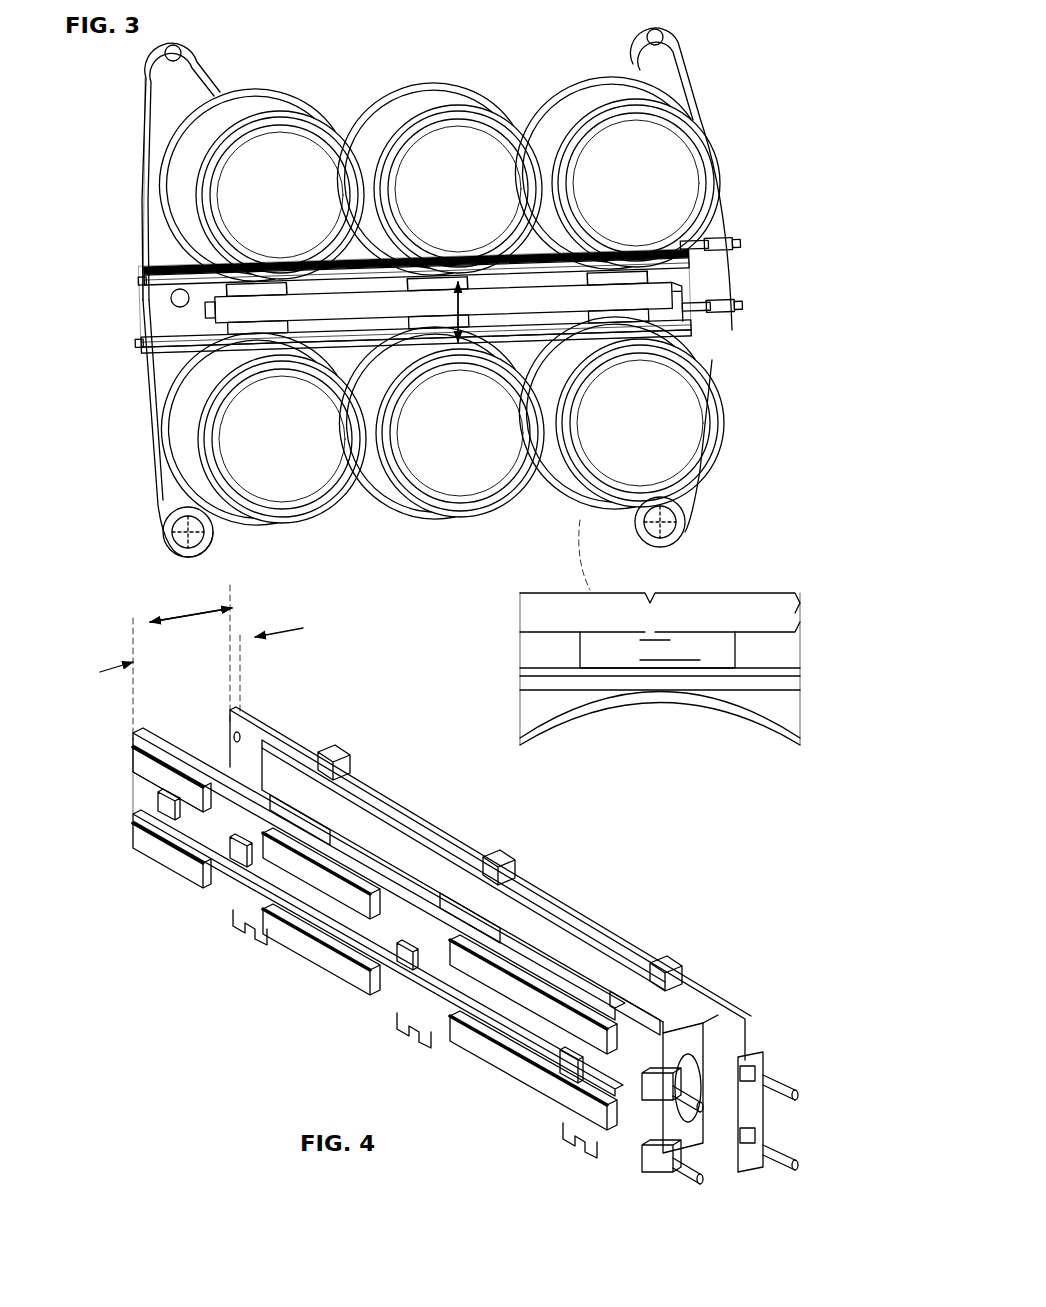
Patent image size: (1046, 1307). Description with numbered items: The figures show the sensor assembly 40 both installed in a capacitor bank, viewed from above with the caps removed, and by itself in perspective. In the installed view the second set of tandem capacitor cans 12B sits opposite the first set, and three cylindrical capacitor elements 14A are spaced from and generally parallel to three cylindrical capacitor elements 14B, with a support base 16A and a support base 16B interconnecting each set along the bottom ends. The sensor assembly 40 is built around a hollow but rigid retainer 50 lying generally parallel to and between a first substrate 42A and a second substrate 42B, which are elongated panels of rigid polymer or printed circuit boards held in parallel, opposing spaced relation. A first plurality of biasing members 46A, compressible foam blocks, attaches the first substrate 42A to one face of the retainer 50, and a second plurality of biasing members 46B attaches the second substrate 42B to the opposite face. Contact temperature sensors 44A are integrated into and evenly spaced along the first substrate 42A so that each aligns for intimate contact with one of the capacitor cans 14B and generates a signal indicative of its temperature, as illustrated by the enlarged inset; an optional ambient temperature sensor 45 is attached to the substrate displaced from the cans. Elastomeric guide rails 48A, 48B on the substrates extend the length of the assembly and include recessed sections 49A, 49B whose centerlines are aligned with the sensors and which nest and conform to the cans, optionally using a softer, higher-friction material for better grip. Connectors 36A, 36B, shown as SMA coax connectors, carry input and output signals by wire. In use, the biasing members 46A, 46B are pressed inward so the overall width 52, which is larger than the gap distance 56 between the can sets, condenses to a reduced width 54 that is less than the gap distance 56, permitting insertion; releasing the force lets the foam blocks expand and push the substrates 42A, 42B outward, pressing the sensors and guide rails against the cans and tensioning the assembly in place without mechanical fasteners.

In FIG. 3, the second set of tandem capacitor cans 12B is at (498, 80).
In FIG. 3, the cylindrical capacitor elements 14A is at (243, 108).
In FIG. 3, the cylindrical capacitor elements 14B is at (288, 525).
In FIG. 3, the support base 16A is at (150, 175).
In FIG. 3, the support base 16B is at (150, 440).
In FIG. 3, the connector 36A is at (738, 345).
In FIG. 4, the connector 36A is at (683, 1107).
In FIG. 3, the connector 36B is at (738, 240).
In FIG. 4, the connector 36B is at (788, 1160).
In FIG. 3, the sensor assembly 40 is at (177, 252).
In FIG. 4, the sensor assembly 40 is at (662, 872).
In FIG. 3, the first substrate 42A is at (150, 341).
In FIG. 4, the first substrate 42A is at (140, 733).
In FIG. 3, the second substrate 42B is at (150, 270).
In FIG. 4, the second substrate 42B is at (232, 713).
In FIG. 3, the contact temperature sensors 44A is at (645, 690).
In FIG. 4, the contact temperature sensors 44A is at (230, 857).
In FIG. 4, the ambient temperature sensor 45 is at (160, 803).
In FIG. 3, the biasing members 46A is at (262, 330).
In FIG. 4, the biasing members 46A is at (283, 810).
In FIG. 3, the biasing members 46B is at (277, 290).
In FIG. 4, the biasing members 46B is at (353, 803).
In FIG. 3, the elastomeric guide rail 48A is at (150, 336).
In FIG. 4, the elastomeric guide rail 48A is at (300, 893).
In FIG. 3, the elastomeric guide rail 48B is at (152, 263).
In FIG. 4, the elastomeric guide rail 48B is at (572, 923).
In FIG. 4, the recessed sections 49A is at (235, 815).
In FIG. 3, the recessed sections 49B is at (250, 275).
In FIG. 3, the rigid retainer 50 is at (690, 300).
In FIG. 4, the rigid retainer 50 is at (413, 827).
In FIG. 4, the overall width 52 is at (85, 670).
In FIG. 4, the reduced width 54 is at (185, 616).
In FIG. 3, the gap distance 56 is at (468, 304).